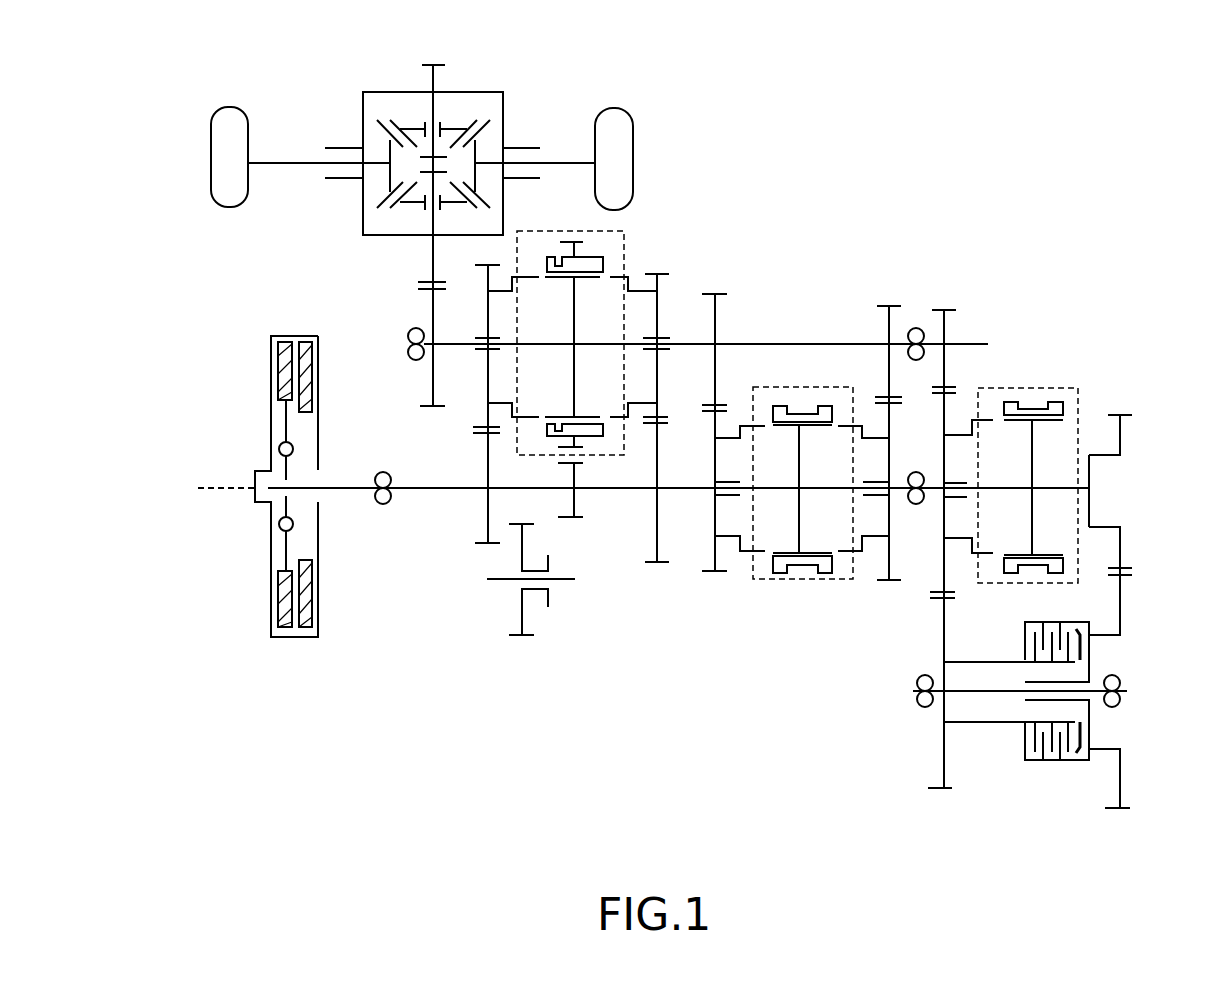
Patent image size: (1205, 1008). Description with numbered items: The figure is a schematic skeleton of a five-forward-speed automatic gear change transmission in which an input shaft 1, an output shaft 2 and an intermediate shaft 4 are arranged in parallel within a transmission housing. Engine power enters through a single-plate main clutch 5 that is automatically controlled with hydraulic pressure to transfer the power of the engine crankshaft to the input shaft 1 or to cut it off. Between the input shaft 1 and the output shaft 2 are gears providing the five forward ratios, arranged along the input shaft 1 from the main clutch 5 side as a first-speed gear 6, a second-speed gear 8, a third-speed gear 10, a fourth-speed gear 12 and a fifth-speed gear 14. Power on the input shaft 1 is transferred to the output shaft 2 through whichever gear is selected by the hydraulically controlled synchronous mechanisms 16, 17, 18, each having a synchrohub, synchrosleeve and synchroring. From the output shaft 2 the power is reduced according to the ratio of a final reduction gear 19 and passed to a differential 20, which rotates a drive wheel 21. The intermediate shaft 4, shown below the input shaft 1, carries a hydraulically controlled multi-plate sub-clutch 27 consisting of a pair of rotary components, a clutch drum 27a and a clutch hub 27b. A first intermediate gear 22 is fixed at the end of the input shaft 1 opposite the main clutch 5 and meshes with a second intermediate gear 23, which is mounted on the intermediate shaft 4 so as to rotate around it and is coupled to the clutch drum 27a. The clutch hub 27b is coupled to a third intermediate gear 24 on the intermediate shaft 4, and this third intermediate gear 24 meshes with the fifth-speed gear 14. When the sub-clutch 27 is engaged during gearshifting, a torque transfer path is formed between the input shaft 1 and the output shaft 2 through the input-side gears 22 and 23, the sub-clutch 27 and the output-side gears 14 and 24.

The input shaft 1 is at (430, 492).
The output shaft 2 is at (978, 344).
The intermediate shaft 4 is at (1125, 697).
The main clutch 5 is at (271, 367).
The first-speed gear 6 is at (480, 551).
The second-speed gear 8 is at (664, 568).
The third-speed gear 10 is at (722, 577).
The fourth-speed gear 12 is at (886, 586).
The fifth-speed gear 14 is at (938, 571).
The synchronous mechanism 16 is at (633, 250).
The synchronous mechanism 17 is at (806, 583).
The synchronous mechanism 18 is at (1053, 388).
The final reduction gear 19 is at (406, 294).
The differential 20 is at (503, 113).
The drive wheel 21 is at (633, 140).
The first intermediate gear 22 is at (1122, 412).
The second intermediate gear 23 is at (1120, 605).
The third intermediate gear 24 is at (943, 750).
The sub-clutch 27 is at (998, 730).
The clutch drum 27a is at (1089, 650).
The clutch hub 27b is at (983, 660).